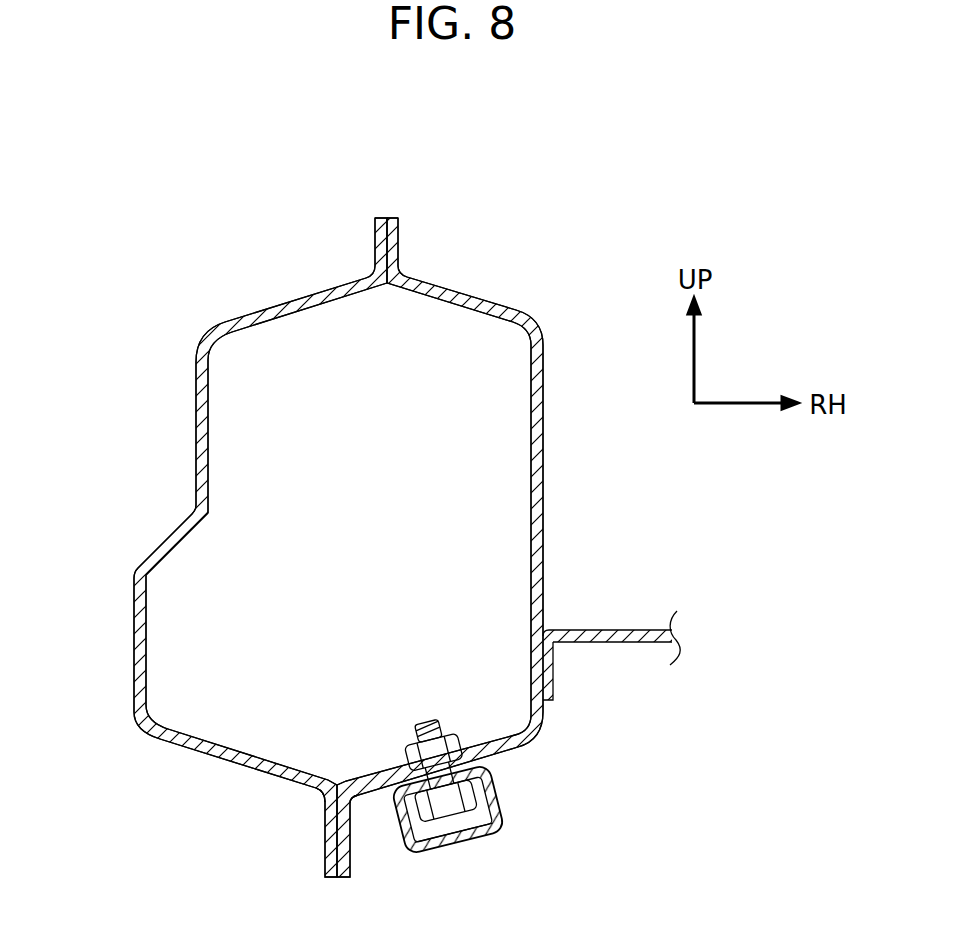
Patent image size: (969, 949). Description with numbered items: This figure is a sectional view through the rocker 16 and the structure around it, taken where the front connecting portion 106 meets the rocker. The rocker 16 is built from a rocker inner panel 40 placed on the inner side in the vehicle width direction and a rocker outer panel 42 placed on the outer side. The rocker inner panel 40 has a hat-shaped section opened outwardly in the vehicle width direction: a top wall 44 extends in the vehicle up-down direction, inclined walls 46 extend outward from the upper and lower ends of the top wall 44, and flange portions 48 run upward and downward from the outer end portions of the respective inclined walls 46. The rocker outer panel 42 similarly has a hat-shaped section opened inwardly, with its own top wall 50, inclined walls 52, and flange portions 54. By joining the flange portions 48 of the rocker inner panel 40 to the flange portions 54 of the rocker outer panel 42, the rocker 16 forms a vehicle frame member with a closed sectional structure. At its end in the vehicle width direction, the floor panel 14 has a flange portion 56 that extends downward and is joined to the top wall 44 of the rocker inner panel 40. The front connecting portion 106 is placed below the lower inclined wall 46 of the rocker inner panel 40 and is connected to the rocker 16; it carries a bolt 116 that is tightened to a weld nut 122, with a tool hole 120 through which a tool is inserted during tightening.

The floor panel 14 is at (643, 628).
The rocker 16 is at (188, 288).
The rocker inner panel 40 is at (544, 376).
The rocker outer panel 42 is at (196, 405).
The top wall 44 is at (544, 481).
The inclined walls 46 is at (470, 300).
The flange portions 48 is at (400, 236).
The top wall 50 is at (133, 599).
The inclined walls 52 is at (246, 312).
The flange portions 54 is at (375, 232).
The flange portion 56 is at (556, 672).
The front connecting portion 106 is at (512, 822).
The bolt 116 is at (468, 790).
The tool hole 120 is at (460, 845).
The weld nut 122 is at (413, 745).